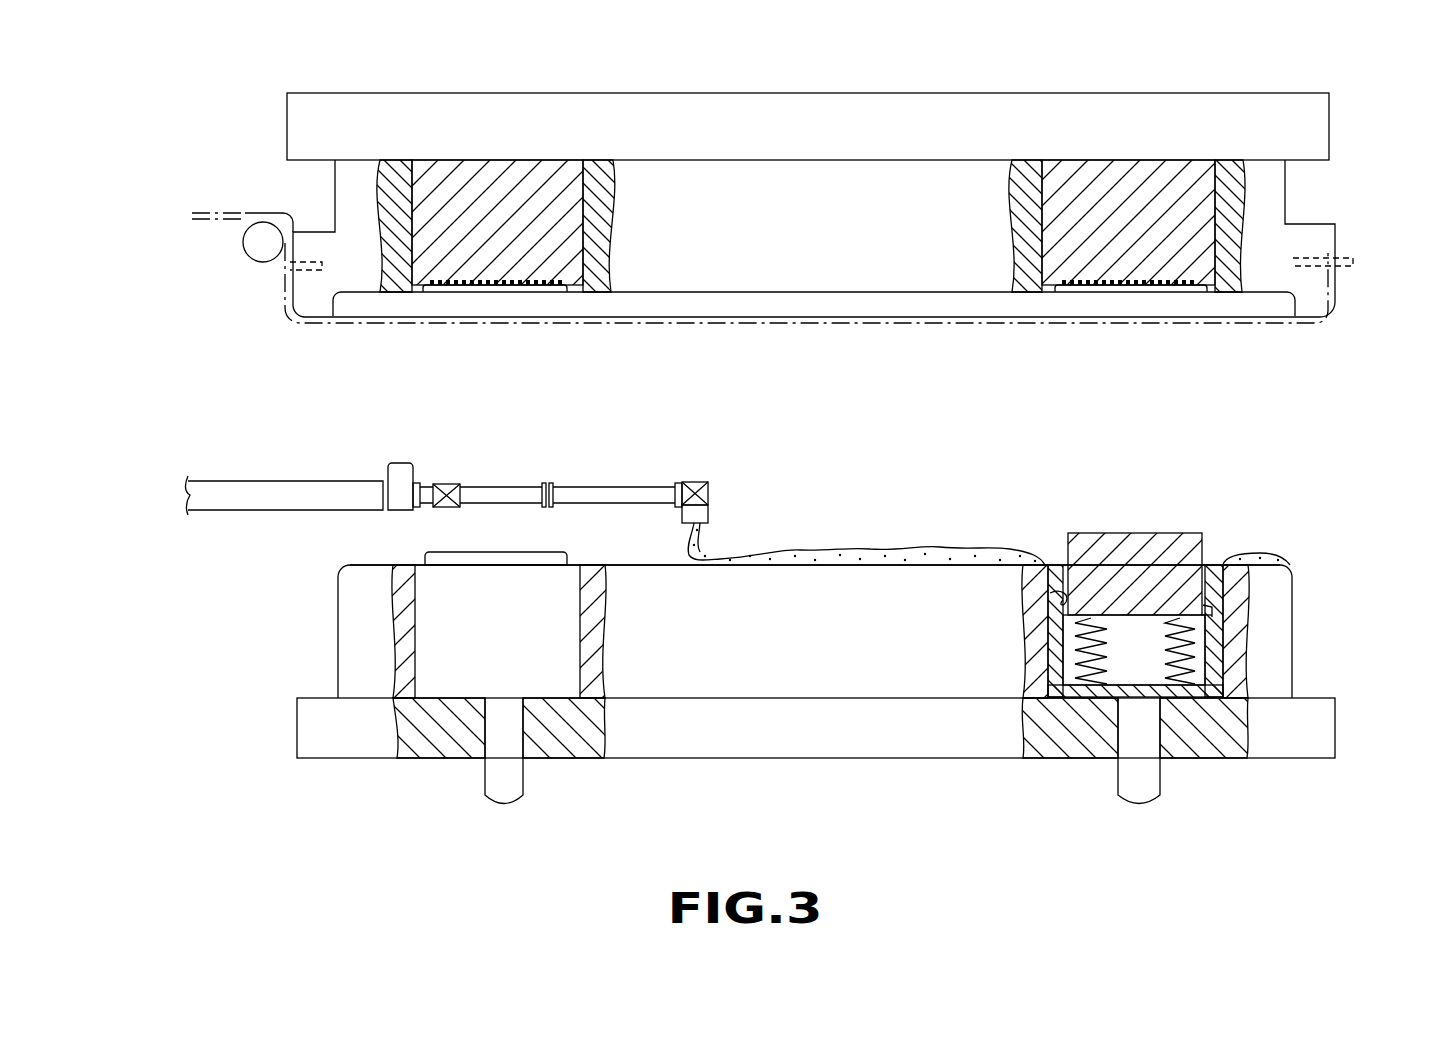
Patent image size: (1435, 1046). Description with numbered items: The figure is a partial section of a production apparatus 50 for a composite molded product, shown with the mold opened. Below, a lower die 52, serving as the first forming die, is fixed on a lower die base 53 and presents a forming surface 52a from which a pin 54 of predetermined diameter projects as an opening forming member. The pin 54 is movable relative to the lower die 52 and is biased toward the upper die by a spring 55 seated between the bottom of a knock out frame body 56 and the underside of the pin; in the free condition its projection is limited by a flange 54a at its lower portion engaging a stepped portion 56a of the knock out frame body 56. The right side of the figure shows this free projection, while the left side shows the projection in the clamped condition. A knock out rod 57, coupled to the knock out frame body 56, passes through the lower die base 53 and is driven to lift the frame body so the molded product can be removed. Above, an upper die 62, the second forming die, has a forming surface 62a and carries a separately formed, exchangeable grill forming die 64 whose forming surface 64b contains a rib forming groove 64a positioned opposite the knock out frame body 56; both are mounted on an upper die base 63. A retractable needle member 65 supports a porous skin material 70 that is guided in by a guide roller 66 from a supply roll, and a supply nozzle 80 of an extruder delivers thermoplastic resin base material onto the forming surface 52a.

The lower mold assembly 50 is at (1350, 713).
The lower die 52 is at (1265, 652).
The forming surface 52a is at (657, 560).
The lower die base 53 is at (878, 742).
The pin 54 is at (470, 552).
The flange 54a is at (1207, 617).
The spring 55 is at (1172, 700).
The knock out frame body 56 is at (557, 667).
The stepped portion 56a is at (1048, 592).
The knock out rod 57 is at (515, 785).
The upper die 62 is at (1262, 198).
The forming surface 62a is at (770, 298).
The upper die base 63 is at (912, 118).
The grill forming die 64 is at (526, 178).
The rib forming groove 64a is at (480, 276).
The forming surface 64b is at (567, 292).
The needle member 65 is at (294, 264).
The guide roller 66 is at (255, 248).
The porous skin material 70 is at (920, 322).
The supply nozzle 80 is at (580, 493).